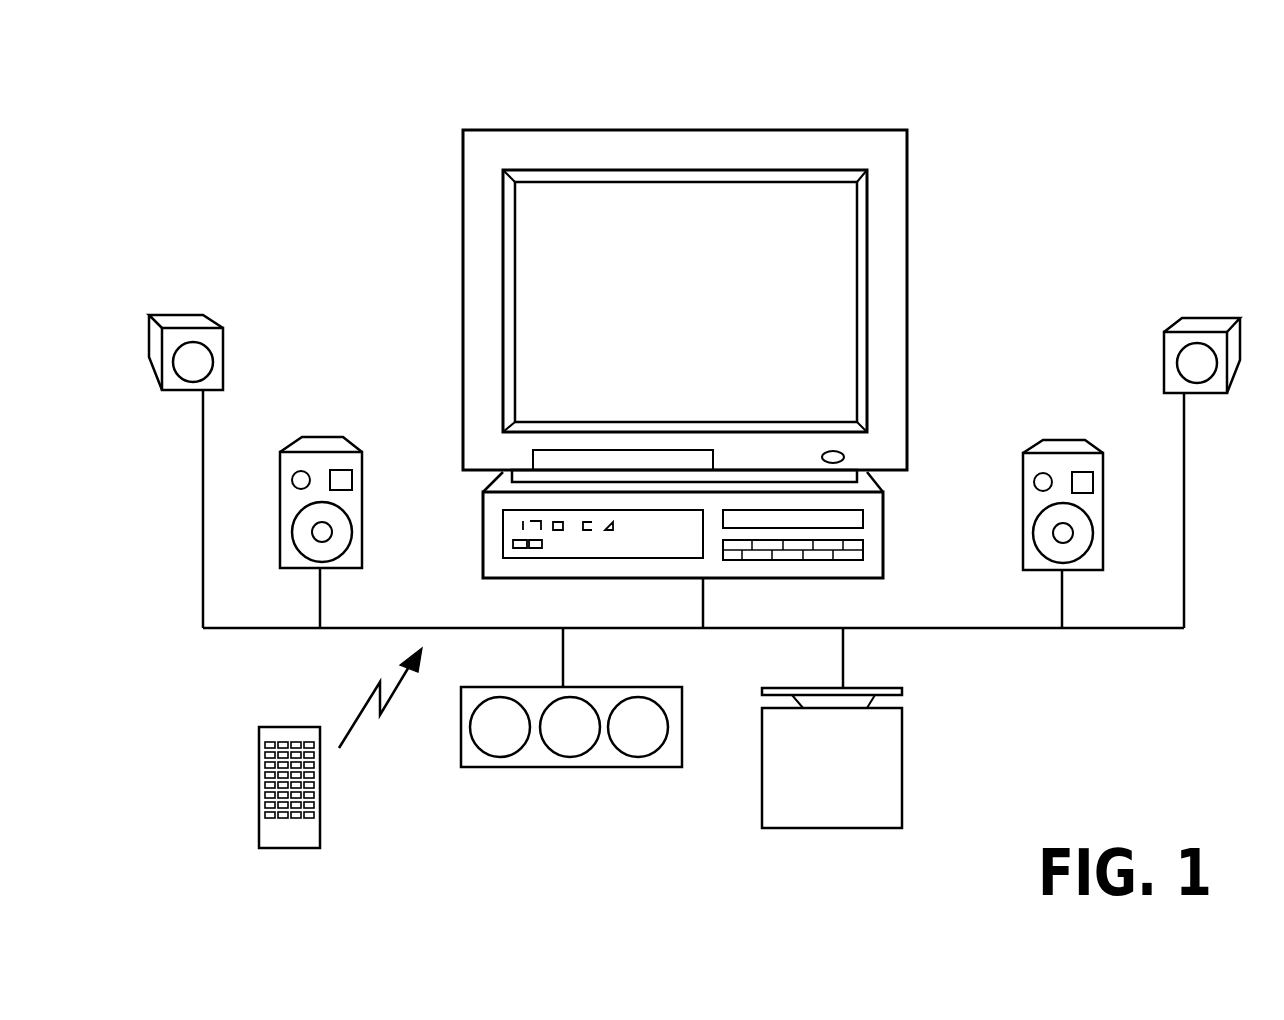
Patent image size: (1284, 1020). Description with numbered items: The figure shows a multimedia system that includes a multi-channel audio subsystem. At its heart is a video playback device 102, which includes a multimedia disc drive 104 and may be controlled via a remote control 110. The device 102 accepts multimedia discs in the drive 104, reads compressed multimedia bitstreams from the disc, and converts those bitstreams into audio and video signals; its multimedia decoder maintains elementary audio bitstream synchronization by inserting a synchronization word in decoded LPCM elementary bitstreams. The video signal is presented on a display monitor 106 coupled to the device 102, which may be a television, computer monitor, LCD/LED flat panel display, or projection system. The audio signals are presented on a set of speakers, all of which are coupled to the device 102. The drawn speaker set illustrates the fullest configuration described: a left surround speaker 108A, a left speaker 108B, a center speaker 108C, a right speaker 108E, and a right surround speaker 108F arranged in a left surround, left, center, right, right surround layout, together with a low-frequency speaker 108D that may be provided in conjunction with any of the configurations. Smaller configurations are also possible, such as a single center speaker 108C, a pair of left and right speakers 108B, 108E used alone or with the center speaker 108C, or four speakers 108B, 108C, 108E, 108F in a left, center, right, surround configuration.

The video playback device 102 is at (483, 538).
The multimedia disc drive 104 is at (863, 521).
The display monitor 106 is at (463, 390).
The left surround speaker 108A is at (183, 471).
The left speaker 108B is at (293, 513).
The center speaker 108C is at (571, 718).
The low-frequency speaker 108D is at (832, 748).
The right speaker 108E is at (1089, 513).
The right surround speaker 108F is at (1197, 473).
The remote control 110 is at (322, 748).